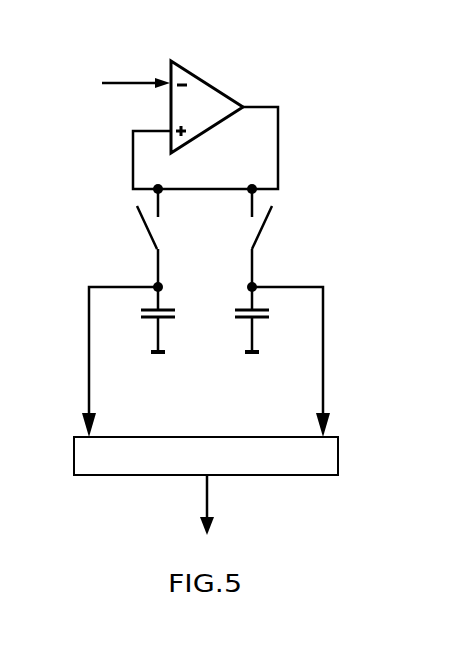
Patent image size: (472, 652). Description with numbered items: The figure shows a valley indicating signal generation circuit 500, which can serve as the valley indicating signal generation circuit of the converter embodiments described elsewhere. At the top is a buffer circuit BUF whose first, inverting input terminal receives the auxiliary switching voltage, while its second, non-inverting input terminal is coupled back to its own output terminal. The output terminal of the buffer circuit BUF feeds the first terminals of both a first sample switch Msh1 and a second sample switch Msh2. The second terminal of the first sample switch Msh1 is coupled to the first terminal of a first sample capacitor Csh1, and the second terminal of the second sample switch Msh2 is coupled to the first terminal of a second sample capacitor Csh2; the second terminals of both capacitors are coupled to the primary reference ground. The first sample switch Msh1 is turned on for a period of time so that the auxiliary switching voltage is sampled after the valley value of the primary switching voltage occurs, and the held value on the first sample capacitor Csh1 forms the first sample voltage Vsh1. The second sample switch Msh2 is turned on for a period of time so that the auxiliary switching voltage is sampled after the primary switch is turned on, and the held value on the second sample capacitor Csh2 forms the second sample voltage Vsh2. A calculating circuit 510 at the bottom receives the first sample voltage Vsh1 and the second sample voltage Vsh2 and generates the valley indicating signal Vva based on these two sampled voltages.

The valley indicating signal generation circuit 500 is at (334, 57).
The calculating circuit 510 is at (266, 475).
The buffer circuit BUF is at (205, 125).
The first sample switch Msh1 is at (124, 238).
The second sample switch Msh2 is at (286, 238).
The first sample capacitor Csh1 is at (138, 319).
The second sample capacitor Csh2 is at (274, 319).
The first sample voltage Vsh1 is at (98, 362).
The second sample voltage Vsh2 is at (291, 362).
The valley indicating signal Vva is at (189, 508).